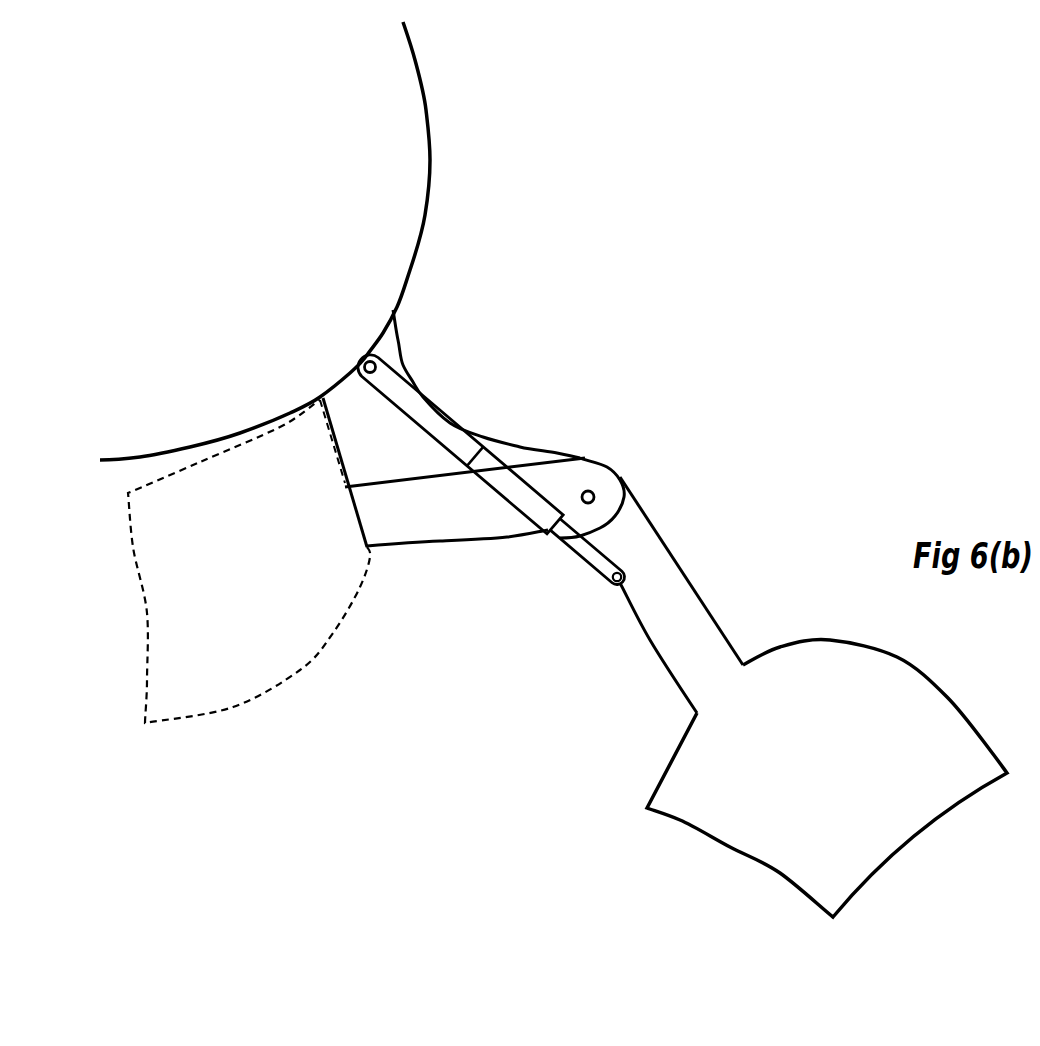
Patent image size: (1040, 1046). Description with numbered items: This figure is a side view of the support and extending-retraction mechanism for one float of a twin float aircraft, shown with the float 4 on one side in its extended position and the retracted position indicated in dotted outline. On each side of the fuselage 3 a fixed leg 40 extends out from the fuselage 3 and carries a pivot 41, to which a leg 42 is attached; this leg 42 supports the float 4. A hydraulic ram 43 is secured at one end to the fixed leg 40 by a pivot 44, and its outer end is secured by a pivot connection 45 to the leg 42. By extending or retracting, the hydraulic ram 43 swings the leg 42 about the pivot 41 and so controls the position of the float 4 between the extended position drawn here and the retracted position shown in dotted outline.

The fuselage 3 is at (405, 198).
The float 4 is at (915, 807).
The fixed leg 40 is at (400, 350).
The pivot 41 is at (595, 494).
The leg 42 is at (698, 633).
The hydraulic ram 43 is at (585, 553).
The pivot 44 is at (371, 352).
The pivot connection 45 is at (623, 567).